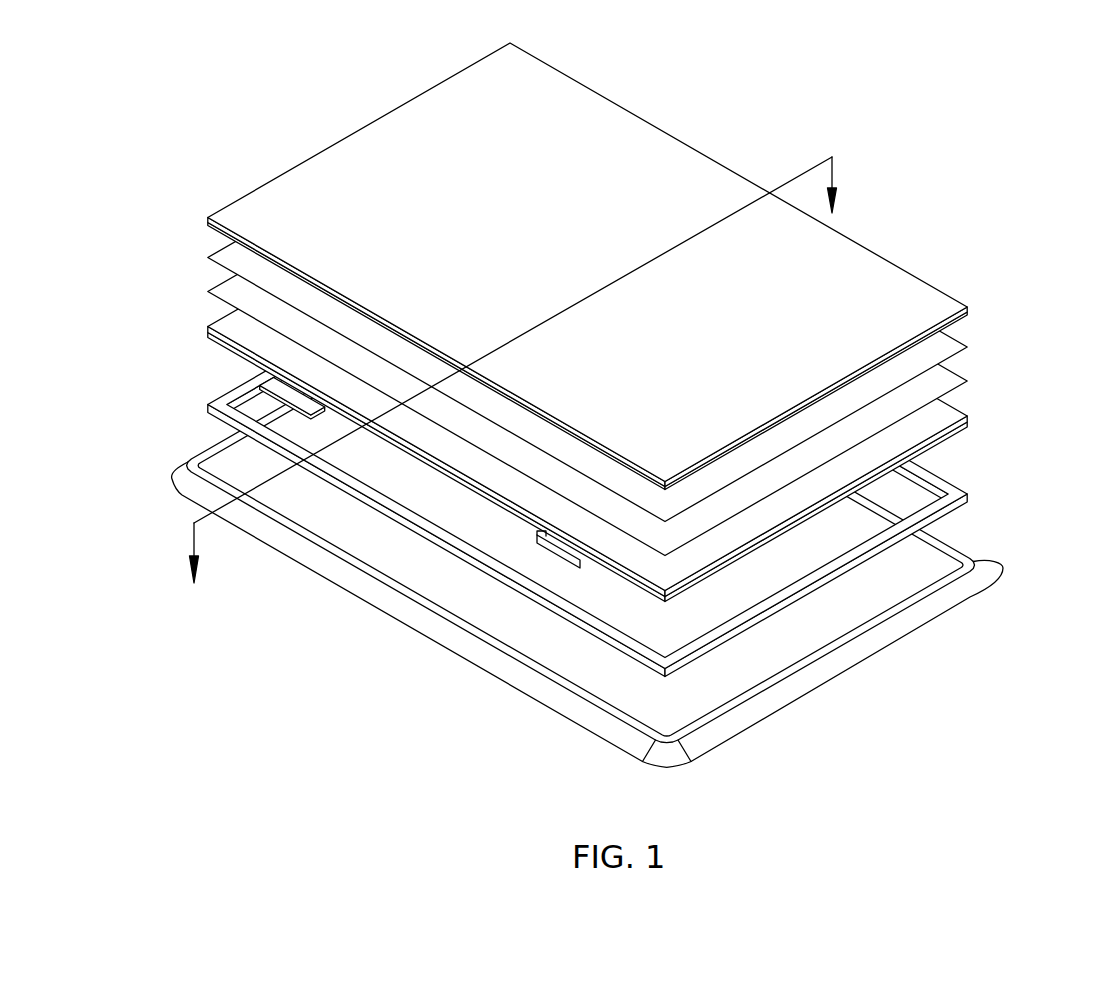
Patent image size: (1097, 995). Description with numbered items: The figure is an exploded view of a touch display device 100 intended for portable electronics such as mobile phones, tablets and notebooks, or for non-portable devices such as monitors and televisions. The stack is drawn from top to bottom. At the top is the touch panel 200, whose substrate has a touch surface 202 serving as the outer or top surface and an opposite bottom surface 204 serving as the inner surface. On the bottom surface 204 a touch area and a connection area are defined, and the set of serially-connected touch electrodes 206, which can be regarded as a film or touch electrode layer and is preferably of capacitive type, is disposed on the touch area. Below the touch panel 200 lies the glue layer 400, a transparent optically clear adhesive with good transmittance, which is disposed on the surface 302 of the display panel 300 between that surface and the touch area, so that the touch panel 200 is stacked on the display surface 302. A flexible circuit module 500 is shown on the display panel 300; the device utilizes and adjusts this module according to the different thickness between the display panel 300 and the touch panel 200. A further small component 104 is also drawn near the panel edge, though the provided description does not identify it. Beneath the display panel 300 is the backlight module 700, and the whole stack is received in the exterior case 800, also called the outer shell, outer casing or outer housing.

The touch display device 100 is at (168, 88).
The touch panel 200 is at (589, 266).
The touch surface 202 is at (237, 208).
The bottom surface 204 is at (219, 227).
The set of serially-connected touch electrodes 206 is at (958, 340).
The glue layer 400 is at (958, 375).
The display panel 300 is at (638, 377).
The surface 302 is at (947, 416).
The flexible circuit module 500 is at (470, 424).
The connector tab 104 is at (506, 523).
The backlight module 700 is at (963, 490).
The exterior case 800 is at (985, 562).